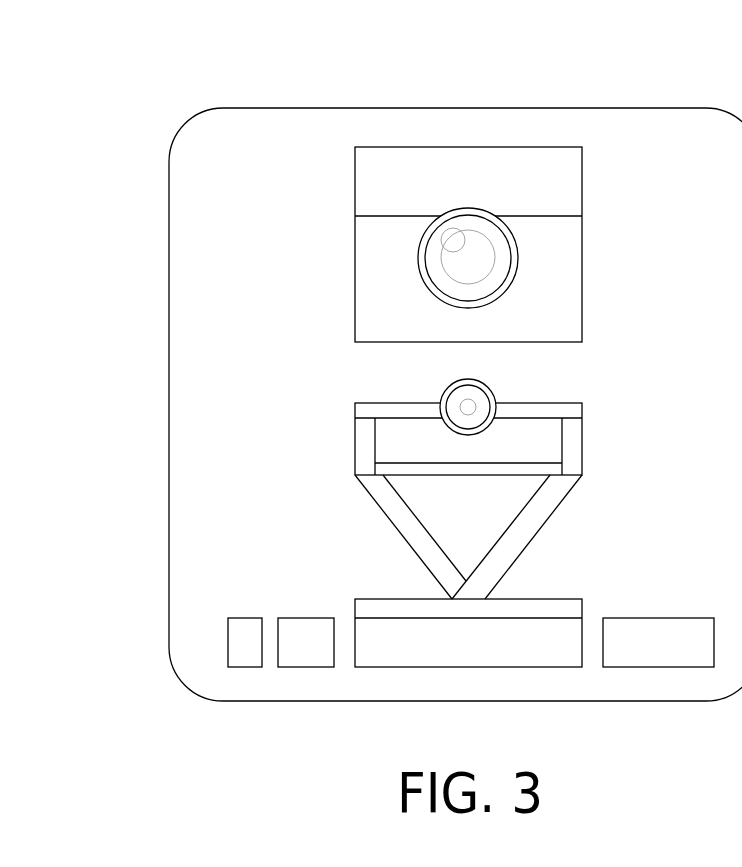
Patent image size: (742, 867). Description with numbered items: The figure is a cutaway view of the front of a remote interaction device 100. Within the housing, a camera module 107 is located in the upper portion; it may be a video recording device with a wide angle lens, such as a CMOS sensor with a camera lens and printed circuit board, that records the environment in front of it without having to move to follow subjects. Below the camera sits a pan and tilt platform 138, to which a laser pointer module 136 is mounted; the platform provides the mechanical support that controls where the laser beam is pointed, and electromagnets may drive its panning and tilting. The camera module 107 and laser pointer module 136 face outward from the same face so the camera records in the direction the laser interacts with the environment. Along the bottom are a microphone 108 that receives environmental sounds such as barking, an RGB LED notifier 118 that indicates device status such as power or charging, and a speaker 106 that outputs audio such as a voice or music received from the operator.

The remote interaction device 100 is at (126, 100).
The camera module 107 is at (503, 258).
The laser pointer module 136 is at (480, 400).
The pan and tilt platform 138 is at (527, 527).
The microphone 108 is at (240, 628).
The RGB LED notifier 118 is at (310, 655).
The speaker 106 is at (670, 628).